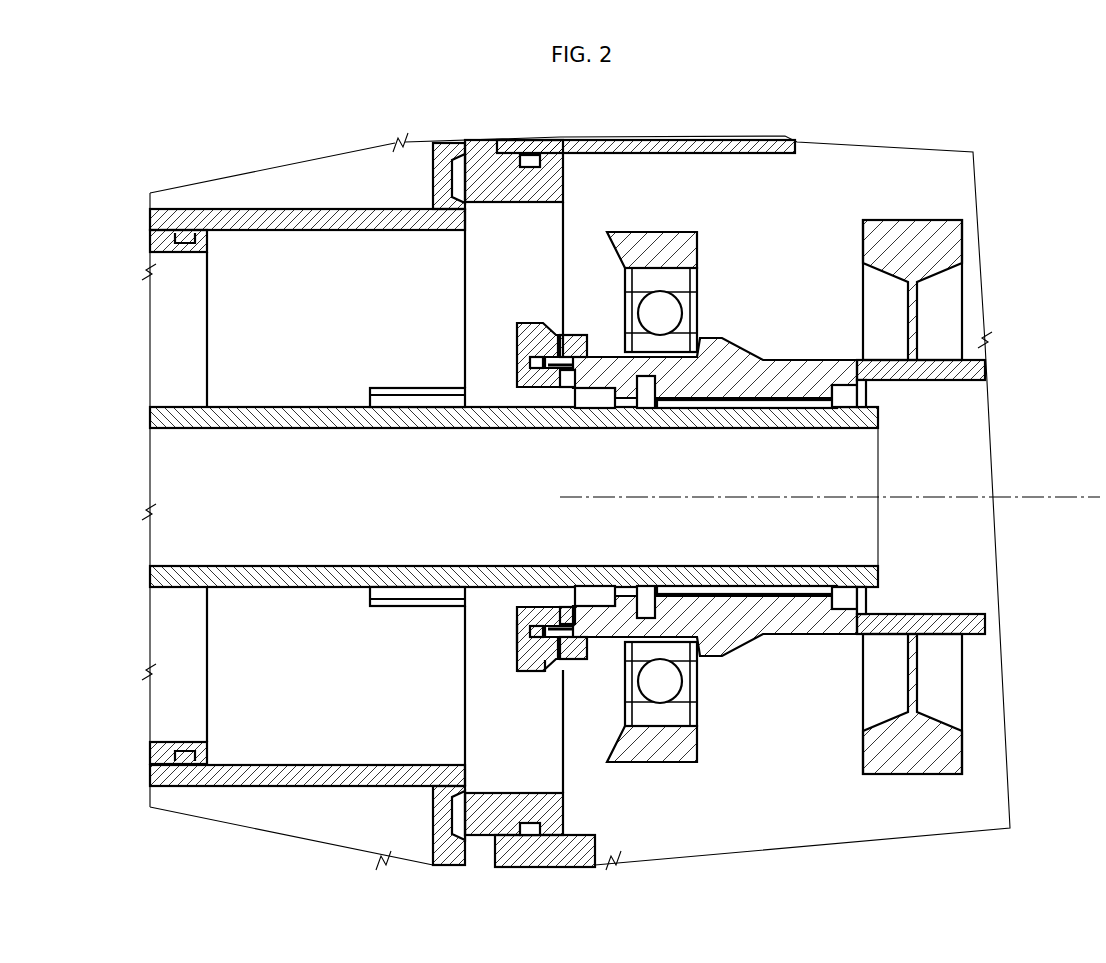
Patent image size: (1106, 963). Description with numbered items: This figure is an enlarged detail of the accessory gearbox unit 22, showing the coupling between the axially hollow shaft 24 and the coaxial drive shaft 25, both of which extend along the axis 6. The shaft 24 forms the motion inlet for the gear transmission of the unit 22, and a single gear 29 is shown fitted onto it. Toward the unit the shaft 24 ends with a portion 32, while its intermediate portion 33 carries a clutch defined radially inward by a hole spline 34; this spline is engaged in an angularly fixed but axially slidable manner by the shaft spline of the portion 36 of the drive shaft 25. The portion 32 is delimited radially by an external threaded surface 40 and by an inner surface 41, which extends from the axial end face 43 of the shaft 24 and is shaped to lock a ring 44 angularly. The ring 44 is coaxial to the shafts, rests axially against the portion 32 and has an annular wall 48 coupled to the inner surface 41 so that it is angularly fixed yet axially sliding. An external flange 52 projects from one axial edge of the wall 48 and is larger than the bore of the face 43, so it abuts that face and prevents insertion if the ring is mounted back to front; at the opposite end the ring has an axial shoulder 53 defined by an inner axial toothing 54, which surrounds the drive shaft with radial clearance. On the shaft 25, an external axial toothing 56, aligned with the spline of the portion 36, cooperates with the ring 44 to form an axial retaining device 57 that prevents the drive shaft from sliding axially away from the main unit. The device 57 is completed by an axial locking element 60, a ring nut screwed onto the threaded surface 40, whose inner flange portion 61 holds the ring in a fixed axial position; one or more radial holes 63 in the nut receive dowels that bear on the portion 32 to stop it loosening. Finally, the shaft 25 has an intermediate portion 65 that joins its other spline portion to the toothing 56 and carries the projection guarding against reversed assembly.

The axis 6 is at (1010, 500).
The accessory gearbox unit 22 is at (942, 846).
The shaft 24 is at (942, 388).
The drive shaft 25 is at (181, 594).
The gear 29 is at (940, 246).
The end portion of shaft 24 32 is at (612, 355).
The intermediate portion of shaft 24 33 is at (780, 358).
The hole spline 34 is at (818, 393).
The shaft spline portion 36 is at (762, 410).
The external threaded surface 40 is at (543, 360).
The inner surface 41 is at (550, 372).
The axial end face 43 is at (516, 660).
The ring 44 is at (540, 372).
The annular wall 48 is at (560, 674).
The external flange 52 is at (518, 640).
The axial shoulder 53 is at (553, 596).
The inner axial toothing 54 is at (574, 596).
The axial toothing 56 is at (410, 388).
The axial retaining device 57 is at (545, 672).
The axial locking element 60 is at (518, 690).
The inner flange portion 61 is at (515, 615).
The radial hole 63 is at (566, 330).
The intermediate portion of shaft 25 65 is at (178, 564).